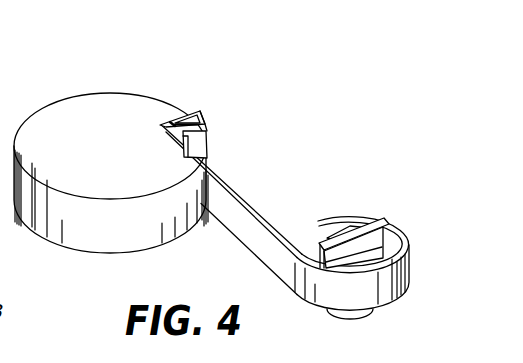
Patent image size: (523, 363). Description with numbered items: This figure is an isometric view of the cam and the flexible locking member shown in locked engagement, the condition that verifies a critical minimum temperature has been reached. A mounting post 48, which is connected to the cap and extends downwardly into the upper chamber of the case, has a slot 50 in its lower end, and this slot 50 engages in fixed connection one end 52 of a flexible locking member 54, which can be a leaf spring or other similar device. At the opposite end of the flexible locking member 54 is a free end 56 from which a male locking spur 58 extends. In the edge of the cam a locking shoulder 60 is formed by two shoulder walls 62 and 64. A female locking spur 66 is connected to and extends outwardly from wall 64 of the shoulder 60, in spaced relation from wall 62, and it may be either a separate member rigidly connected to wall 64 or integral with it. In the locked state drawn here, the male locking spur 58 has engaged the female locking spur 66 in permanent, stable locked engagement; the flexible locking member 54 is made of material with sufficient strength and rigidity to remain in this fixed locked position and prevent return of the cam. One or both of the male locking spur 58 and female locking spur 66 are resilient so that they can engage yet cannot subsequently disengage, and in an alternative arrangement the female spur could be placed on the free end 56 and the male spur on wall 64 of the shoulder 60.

The mounting post 48 is at (346, 228).
The slot 50 is at (323, 240).
The end of flexible locking member 52 is at (372, 224).
The flexible locking member 54 is at (252, 208).
The free end 56 is at (174, 137).
The male locking spur 58 is at (173, 123).
The locking shoulder 60 is at (167, 127).
The shoulder wall 62 is at (207, 163).
The shoulder wall 64 is at (172, 124).
The female locking spur 66 is at (203, 119).